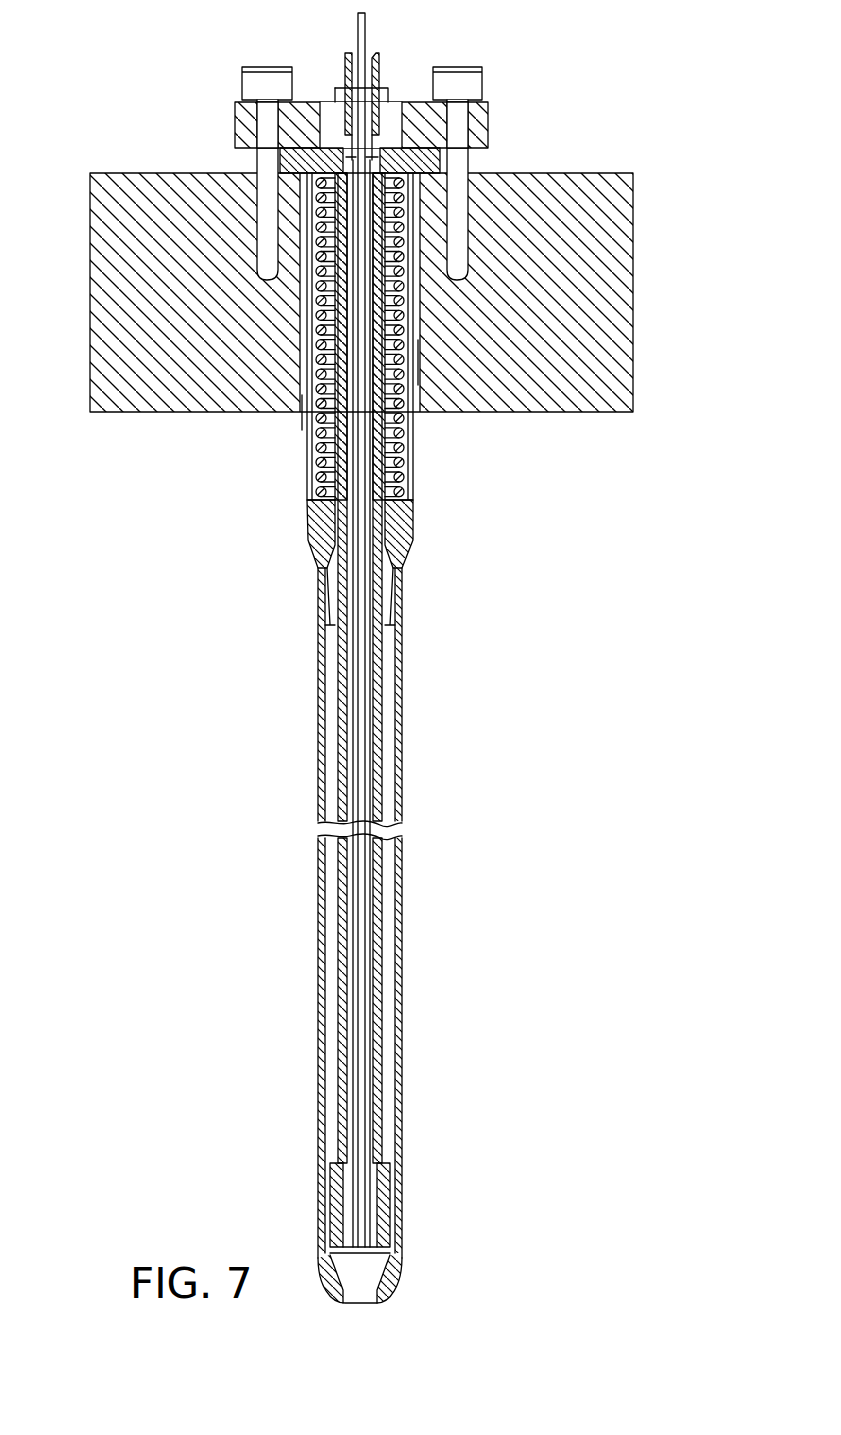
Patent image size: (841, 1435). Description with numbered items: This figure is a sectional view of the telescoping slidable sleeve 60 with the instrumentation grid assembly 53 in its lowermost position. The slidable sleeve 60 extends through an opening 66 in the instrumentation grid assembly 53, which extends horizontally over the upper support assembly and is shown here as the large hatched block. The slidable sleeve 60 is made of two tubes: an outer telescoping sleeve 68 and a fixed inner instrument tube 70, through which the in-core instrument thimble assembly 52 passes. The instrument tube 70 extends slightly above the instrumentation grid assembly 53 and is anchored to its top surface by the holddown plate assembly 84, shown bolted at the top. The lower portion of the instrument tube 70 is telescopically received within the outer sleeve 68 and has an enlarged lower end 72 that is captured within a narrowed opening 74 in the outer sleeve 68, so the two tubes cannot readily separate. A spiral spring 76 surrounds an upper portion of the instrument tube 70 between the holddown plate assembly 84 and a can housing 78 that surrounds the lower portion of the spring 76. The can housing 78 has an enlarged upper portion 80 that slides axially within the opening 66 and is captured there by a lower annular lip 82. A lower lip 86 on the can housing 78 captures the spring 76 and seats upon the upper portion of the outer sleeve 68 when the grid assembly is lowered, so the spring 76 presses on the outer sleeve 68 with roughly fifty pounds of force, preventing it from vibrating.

The in-core instrument thimble assembly 52 is at (356, 45).
The instrumentation grid assembly 53 is at (633, 283).
The slidable sleeve 60 is at (412, 744).
The opening 66 is at (420, 363).
The outer telescoping sleeve 68 is at (404, 885).
The fixed inner instrument tube 70 is at (392, 792).
The enlarged lower end 72 is at (388, 1200).
The narrowed opening 74 is at (403, 568).
The spiral spring 76 is at (413, 435).
The can housing 78 is at (305, 457).
The enlarged upper portion 80 is at (303, 265).
The lower annular lip 82 is at (303, 415).
The holddown plate assembly 84 is at (402, 100).
The lower lip 86 is at (408, 522).